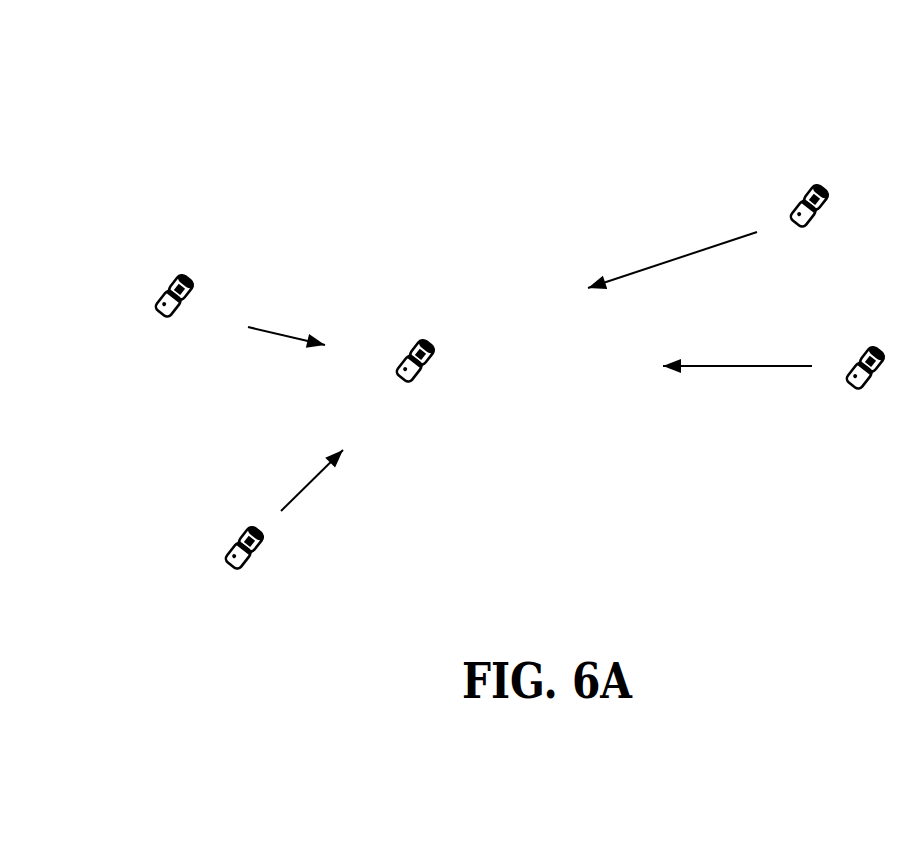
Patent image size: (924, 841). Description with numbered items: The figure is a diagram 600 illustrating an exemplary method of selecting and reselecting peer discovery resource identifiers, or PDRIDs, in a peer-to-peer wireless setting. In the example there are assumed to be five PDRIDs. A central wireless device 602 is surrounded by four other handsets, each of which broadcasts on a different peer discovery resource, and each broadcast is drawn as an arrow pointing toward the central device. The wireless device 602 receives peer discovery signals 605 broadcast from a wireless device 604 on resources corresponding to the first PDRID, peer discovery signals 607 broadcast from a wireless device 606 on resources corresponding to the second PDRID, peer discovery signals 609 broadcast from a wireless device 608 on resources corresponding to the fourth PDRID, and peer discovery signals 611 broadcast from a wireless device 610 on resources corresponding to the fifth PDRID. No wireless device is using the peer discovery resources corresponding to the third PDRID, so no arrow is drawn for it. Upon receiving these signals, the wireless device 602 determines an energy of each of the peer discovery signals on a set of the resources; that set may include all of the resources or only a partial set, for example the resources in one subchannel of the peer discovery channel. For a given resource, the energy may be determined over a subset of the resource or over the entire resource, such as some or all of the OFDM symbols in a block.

The diagram 600 is at (296, 103).
The wireless device 602 is at (432, 376).
The wireless device 604 is at (826, 220).
The peer discovery signals 605 is at (672, 257).
The wireless device 606 is at (881, 382).
The peer discovery signals 607 is at (737, 372).
The wireless device 608 is at (262, 561).
The peer discovery signals 609 is at (283, 485).
The wireless device 610 is at (190, 311).
The peer discovery signals 611 is at (300, 328).